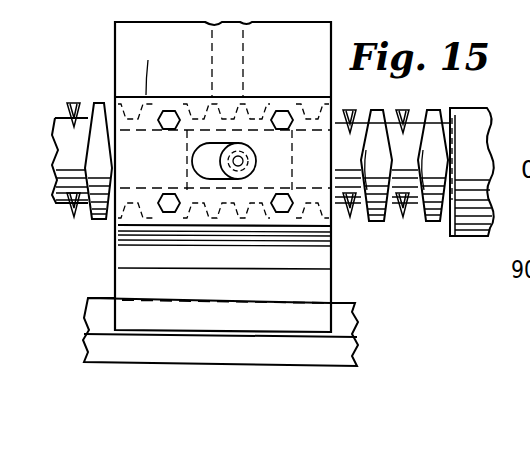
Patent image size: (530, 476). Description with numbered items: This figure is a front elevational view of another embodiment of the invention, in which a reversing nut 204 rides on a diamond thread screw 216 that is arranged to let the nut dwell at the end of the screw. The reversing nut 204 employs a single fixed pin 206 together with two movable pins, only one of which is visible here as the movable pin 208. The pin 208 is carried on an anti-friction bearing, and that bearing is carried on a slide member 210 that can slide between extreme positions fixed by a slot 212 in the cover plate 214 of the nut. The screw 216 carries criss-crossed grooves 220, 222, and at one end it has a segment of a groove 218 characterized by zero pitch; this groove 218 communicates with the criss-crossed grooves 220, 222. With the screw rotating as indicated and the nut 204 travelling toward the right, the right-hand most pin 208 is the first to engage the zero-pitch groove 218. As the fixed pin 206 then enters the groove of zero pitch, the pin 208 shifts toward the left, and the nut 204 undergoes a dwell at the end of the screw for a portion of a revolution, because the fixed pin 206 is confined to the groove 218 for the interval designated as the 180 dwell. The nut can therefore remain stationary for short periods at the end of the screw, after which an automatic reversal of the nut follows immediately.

The reversing nut 204 is at (113, 62).
The fixed pin 206 is at (226, 106).
The movable pin 208 is at (250, 158).
The slide member 210 is at (186, 161).
The slot 212 is at (196, 177).
The cover plate 214 is at (145, 64).
The diamond thread screw 216 is at (387, 224).
The groove of zero pitch 218 is at (455, 146).
The criss-crossed groove 220 is at (362, 106).
The criss-crossed groove 222 is at (478, 108).
The base 180 is at (306, 332).